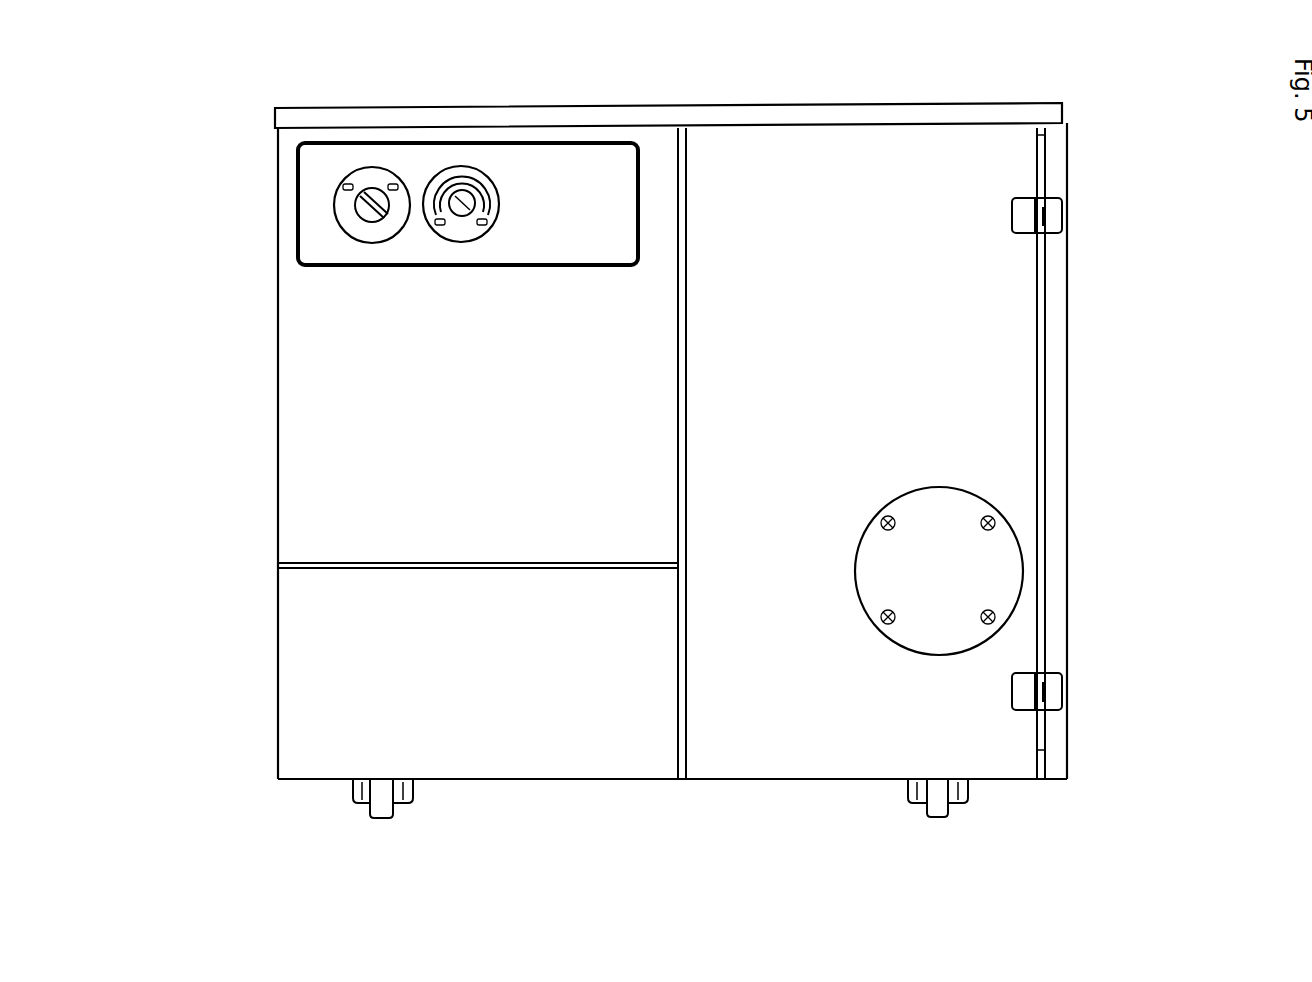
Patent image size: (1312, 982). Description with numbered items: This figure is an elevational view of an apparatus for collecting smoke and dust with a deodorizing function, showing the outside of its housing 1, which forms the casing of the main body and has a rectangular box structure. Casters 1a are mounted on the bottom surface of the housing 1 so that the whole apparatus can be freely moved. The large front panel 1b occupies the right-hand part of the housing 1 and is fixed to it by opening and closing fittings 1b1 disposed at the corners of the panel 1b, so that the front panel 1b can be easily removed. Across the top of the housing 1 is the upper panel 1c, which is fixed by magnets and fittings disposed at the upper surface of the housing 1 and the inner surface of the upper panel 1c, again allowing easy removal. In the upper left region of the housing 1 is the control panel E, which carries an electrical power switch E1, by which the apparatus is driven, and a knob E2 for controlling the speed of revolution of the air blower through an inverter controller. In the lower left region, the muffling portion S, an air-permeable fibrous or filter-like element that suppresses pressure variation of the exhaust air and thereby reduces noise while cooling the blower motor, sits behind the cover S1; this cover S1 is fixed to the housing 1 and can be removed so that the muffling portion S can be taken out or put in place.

The housing 1 is at (438, 427).
The casters 1a is at (380, 810).
The front panel 1b is at (1057, 425).
The opening and closing fitting 1b1 is at (1053, 693).
The upper panel 1c is at (710, 117).
The control panel E is at (290, 203).
The electrical power switch E1 is at (383, 188).
The knob E2 is at (500, 176).
The muffling portion S is at (279, 680).
The cover S1 is at (333, 738).